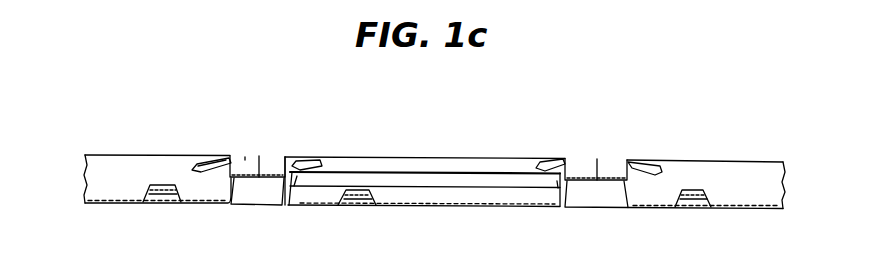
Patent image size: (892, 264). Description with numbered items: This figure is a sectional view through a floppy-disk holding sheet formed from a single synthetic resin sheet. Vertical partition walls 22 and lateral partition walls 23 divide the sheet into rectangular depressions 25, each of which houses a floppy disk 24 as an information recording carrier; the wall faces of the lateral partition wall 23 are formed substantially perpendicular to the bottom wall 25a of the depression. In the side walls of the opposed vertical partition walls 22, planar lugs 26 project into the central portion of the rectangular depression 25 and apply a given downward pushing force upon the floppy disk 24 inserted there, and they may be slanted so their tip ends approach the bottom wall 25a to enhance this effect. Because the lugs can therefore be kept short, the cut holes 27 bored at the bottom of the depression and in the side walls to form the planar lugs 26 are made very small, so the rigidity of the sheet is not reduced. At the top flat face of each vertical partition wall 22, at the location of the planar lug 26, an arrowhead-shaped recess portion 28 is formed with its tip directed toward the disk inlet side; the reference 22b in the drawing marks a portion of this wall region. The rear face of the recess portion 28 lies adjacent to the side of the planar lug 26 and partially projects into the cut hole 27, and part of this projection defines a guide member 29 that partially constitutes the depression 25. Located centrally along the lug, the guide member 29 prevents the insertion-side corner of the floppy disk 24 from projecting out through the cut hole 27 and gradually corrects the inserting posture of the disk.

The vertical partition wall 22 is at (238, 155).
The recess wall 22b is at (249, 156).
The lateral partition wall 23 is at (413, 157).
The floppy disk 24 is at (447, 178).
The rectangular depression 25 is at (468, 193).
The bottom wall 25a is at (420, 206).
The planar lug 26 is at (315, 157).
The cut hole 27 is at (283, 205).
The recess portion 28 is at (268, 156).
The guide member 29 is at (303, 175).